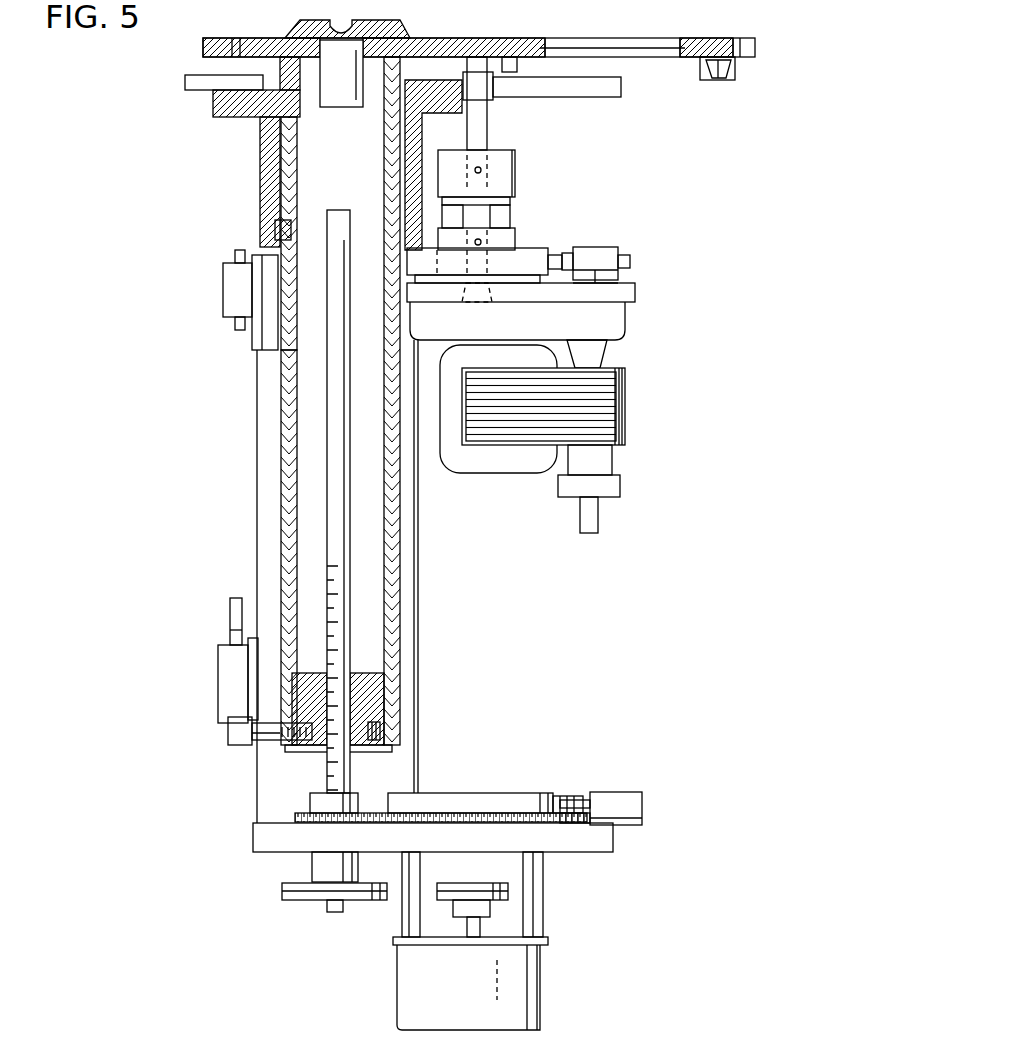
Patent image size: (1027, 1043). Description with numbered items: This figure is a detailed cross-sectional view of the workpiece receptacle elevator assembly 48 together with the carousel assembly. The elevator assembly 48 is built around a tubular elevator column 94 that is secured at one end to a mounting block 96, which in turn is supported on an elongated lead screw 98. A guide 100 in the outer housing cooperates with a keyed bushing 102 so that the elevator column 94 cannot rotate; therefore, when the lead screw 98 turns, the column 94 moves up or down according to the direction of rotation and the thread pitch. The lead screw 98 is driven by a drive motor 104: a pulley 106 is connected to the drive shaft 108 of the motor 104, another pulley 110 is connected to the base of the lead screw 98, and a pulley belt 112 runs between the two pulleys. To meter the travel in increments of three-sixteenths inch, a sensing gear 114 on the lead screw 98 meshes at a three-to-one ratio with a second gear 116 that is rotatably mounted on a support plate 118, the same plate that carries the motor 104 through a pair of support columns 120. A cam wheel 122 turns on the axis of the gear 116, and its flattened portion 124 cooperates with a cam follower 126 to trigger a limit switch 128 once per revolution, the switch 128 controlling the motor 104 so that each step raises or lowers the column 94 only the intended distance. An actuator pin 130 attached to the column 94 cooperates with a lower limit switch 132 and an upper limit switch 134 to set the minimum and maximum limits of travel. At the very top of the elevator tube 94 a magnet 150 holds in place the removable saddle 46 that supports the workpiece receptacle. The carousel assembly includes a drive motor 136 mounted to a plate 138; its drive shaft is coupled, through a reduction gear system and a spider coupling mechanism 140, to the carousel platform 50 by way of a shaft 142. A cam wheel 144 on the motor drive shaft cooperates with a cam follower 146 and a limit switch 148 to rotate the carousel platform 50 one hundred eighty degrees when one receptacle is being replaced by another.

The removable saddle 46 is at (385, 28).
The elevator assembly 48 is at (477, 687).
The carousel platform 50 is at (724, 42).
The elevator column 94 is at (290, 522).
The mounting block 96 is at (305, 673).
The lead screw 98 is at (345, 578).
The guide 100 is at (265, 192).
The keyed bushing 102 is at (270, 150).
The drive motor 104 is at (545, 990).
The pulley 106 is at (503, 884).
The drive shaft 108 is at (493, 937).
The pulley 110 is at (296, 902).
The pulley belt 112 is at (400, 897).
The sensing gear 114 is at (300, 812).
The second gear 116 is at (577, 822).
The support plate 118 is at (613, 840).
The support columns 120 is at (405, 880).
The cam wheel 122 is at (486, 792).
The flattened portion 124 is at (560, 793).
The cam follower 126 is at (577, 803).
The limit switch 128 is at (644, 808).
The actuator pin 130 is at (242, 748).
The lower limit switch 132 is at (218, 682).
The upper limit switch 134 is at (224, 292).
The carousel drive motor 136 is at (540, 468).
The plate 138 is at (636, 292).
The spider coupling mechanism 140 is at (516, 208).
The shaft 142 is at (488, 132).
The cam wheel 144 is at (522, 252).
The cam follower 146 is at (568, 253).
The limit switch 148 is at (608, 248).
The magnet 150 is at (372, 112).